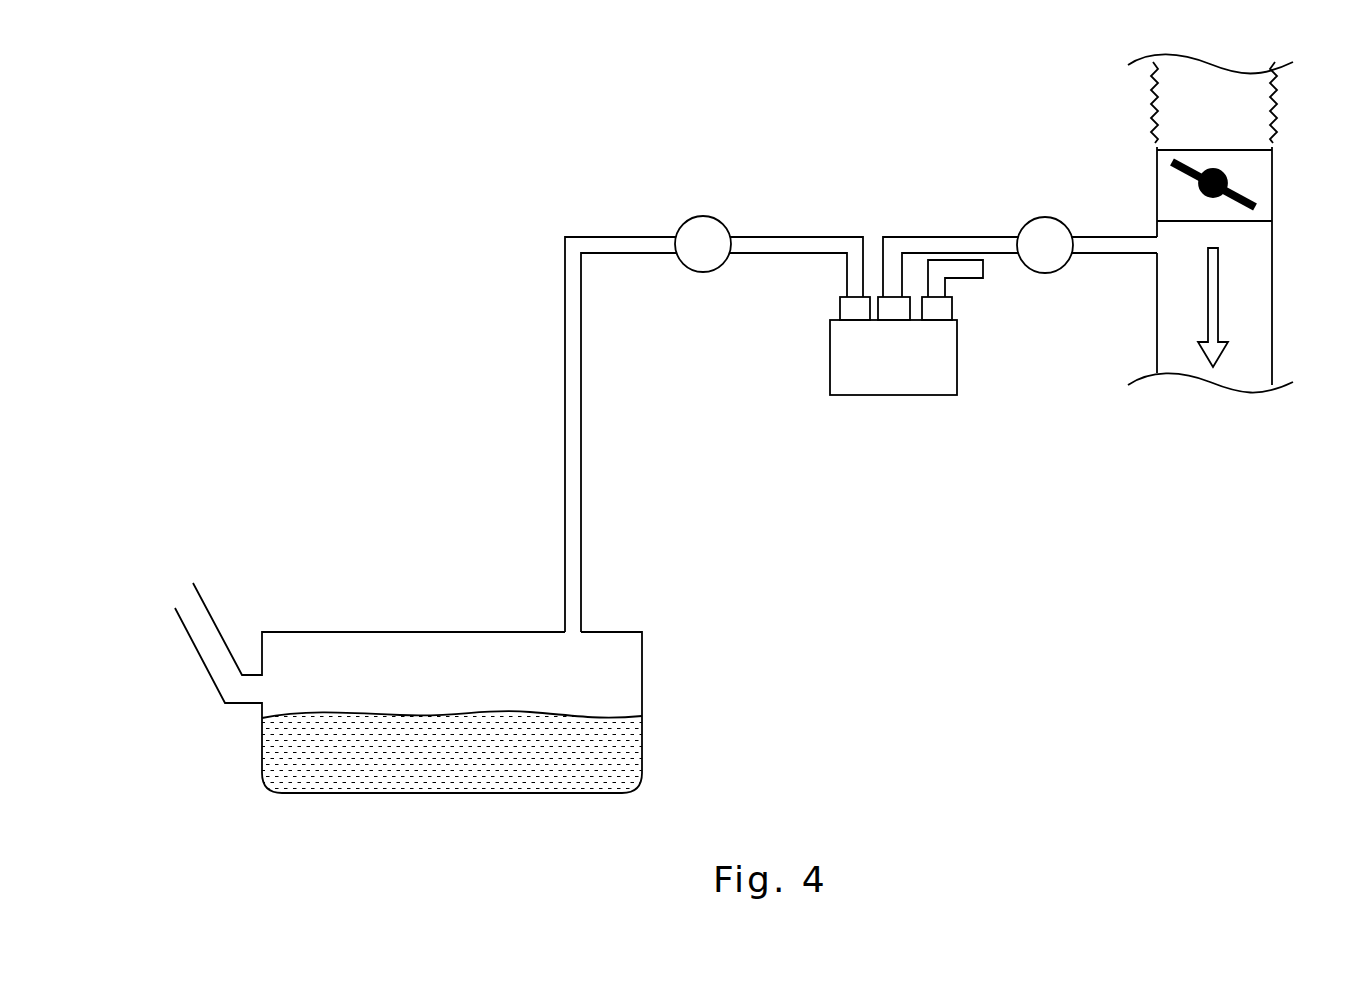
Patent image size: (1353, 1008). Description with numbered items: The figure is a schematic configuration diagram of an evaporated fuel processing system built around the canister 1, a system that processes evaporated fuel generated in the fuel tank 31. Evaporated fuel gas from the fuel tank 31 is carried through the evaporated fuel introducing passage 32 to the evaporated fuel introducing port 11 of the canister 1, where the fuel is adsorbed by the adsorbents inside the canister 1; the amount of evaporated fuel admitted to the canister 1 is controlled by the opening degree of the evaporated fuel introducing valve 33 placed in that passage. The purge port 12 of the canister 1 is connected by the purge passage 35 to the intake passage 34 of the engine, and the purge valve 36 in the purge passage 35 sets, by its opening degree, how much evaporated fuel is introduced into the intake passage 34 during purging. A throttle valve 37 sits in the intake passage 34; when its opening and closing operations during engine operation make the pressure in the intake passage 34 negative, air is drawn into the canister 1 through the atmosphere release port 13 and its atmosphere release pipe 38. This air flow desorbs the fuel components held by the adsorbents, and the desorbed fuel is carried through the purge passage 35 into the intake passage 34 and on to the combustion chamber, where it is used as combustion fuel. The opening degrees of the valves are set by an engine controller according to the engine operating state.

The canister 1 is at (900, 397).
The evaporated fuel introducing port 11 is at (840, 303).
The purge port 12 is at (876, 297).
The atmosphere release port 13 is at (954, 312).
The fuel tank 31 is at (413, 632).
The evaporated fuel introducing passage 32 is at (780, 237).
The evaporated fuel introducing valve 33 is at (703, 272).
The intake passage 34 is at (1272, 305).
The purge passage 35 is at (970, 237).
The purge valve 36 is at (1045, 217).
The throttle valve 37 is at (1258, 197).
The atmosphere release pipe 38 is at (978, 282).